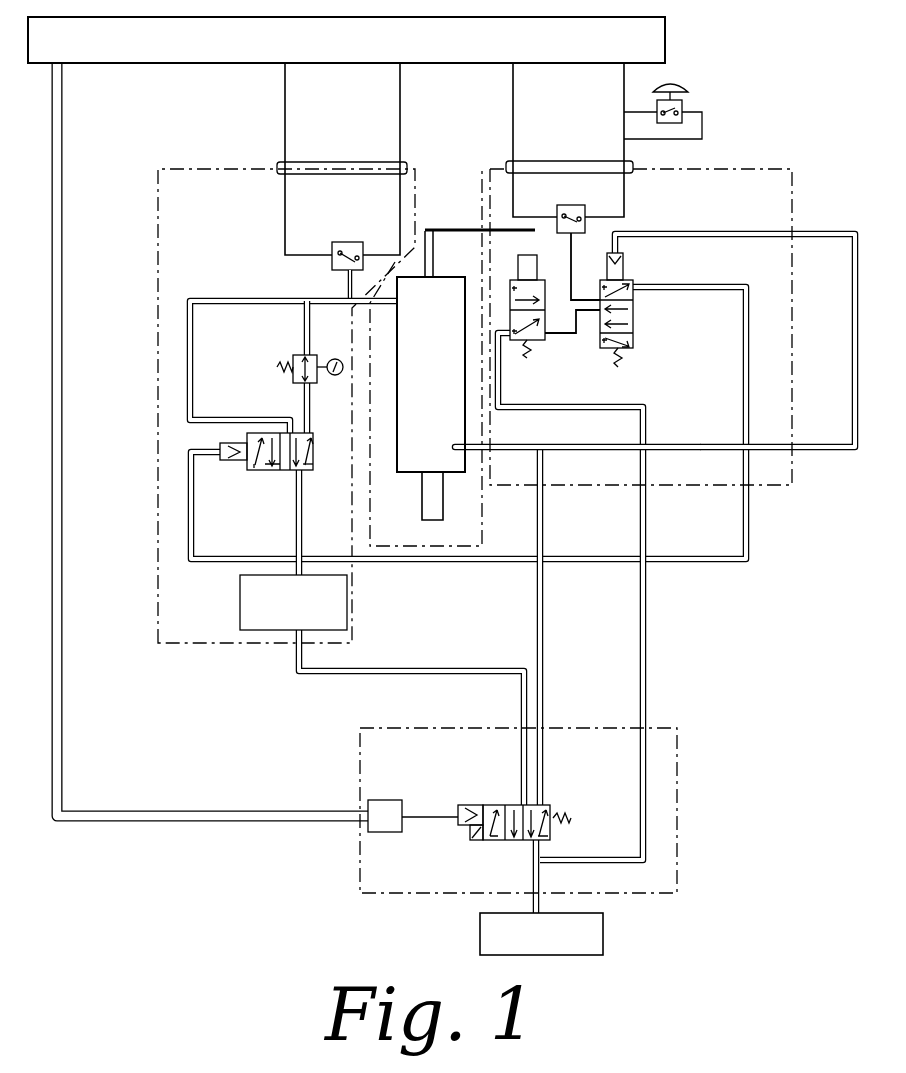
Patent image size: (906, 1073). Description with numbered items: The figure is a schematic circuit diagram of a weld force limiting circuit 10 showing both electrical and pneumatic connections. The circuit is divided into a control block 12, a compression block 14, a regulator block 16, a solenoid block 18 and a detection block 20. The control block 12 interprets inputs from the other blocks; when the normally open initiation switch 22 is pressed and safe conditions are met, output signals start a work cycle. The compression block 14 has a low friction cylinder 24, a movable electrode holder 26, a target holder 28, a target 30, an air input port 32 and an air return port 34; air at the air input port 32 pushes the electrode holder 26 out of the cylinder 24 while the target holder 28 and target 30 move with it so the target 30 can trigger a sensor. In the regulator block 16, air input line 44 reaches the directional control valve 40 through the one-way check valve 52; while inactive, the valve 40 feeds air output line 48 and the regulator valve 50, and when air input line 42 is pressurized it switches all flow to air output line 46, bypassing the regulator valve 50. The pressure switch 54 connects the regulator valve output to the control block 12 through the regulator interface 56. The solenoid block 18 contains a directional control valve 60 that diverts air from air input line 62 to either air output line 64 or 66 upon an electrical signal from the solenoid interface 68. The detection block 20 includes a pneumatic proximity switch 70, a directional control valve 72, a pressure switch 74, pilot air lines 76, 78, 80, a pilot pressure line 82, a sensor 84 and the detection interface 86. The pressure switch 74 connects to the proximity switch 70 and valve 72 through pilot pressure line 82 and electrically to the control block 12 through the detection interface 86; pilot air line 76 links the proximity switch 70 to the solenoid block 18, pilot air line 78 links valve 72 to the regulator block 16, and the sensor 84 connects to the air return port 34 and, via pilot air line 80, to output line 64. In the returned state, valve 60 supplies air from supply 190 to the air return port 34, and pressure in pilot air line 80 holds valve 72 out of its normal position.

The weld force limiting circuit 10 is at (230, 894).
The control block 12 is at (157, 53).
The compression block 14 is at (393, 546).
The regulator block 16 is at (156, 645).
The solenoid block 18 is at (599, 894).
The detection block 20 is at (772, 487).
The initiation switch 22 is at (712, 46).
The low friction cylinder 24 is at (410, 468).
The movable electrode holder 26 is at (437, 508).
The target holder 28 is at (434, 258).
The target 30 is at (455, 228).
The air input port 32 is at (393, 301).
The air return port 34 is at (457, 443).
The directional control valve 40 is at (317, 464).
The air input line 42 is at (189, 498).
The air input line 44 is at (297, 539).
The air output line 46 is at (210, 417).
The air output line 48 is at (304, 423).
The regulator valve 50 is at (293, 357).
The one-way check valve 52 is at (239, 600).
The pressure switch 54 is at (340, 241).
The regulator interface 56 is at (278, 164).
The directional control valve 60 is at (552, 808).
The air input line 62 is at (531, 876).
The air output line 64 is at (543, 767).
The air output line 66 is at (520, 747).
The solenoid interface 68 is at (392, 825).
The pneumatic proximity switch 70 is at (543, 340).
The directional control valve 72 is at (633, 300).
The pressure switch 74 is at (593, 196).
The pilot air line 76 is at (597, 405).
The pilot air line 78 is at (745, 420).
The pilot air line 80 is at (852, 283).
The pilot pressure line 82 is at (571, 290).
The sensor 84 is at (620, 272).
The detection interface 86 is at (525, 160).
The supply 190 is at (588, 944).